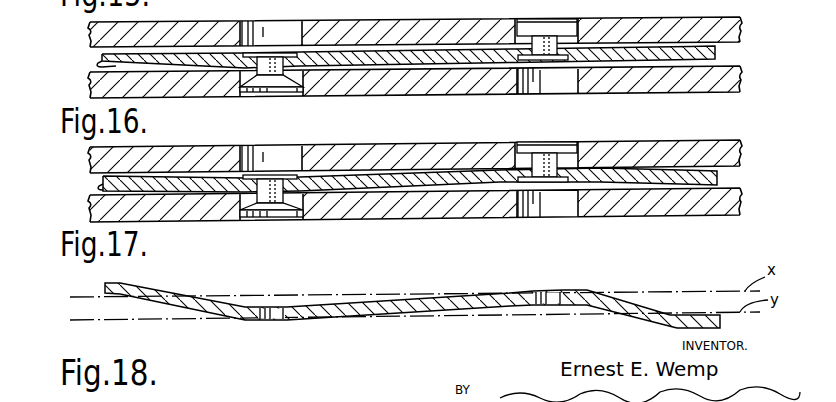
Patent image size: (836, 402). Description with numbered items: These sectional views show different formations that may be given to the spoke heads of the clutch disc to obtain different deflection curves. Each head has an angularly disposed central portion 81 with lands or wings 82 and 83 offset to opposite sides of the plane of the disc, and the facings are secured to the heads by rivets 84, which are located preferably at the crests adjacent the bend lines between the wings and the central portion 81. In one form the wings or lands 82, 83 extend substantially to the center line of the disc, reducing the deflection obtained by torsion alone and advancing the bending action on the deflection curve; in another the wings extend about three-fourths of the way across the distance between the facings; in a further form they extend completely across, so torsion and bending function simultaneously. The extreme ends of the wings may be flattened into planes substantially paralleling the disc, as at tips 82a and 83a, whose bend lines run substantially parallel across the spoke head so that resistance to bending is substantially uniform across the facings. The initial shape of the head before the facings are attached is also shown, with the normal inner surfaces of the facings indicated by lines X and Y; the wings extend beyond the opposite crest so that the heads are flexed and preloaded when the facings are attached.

In FIG. 15, the central portion 81 is at (425, 48).
In FIG. 16, the central portion 81 is at (418, 171).
In FIG. 17, the central portion 81 is at (432, 297).
In FIG. 15, the land or wing 82 is at (605, 46).
In FIG. 16, the land or wing 82 is at (610, 170).
In FIG. 17, the land or wing 82 is at (625, 298).
In FIG. 15, the tip of wing 82a is at (700, 47).
In FIG. 16, the tip of wing 82a is at (700, 171).
In FIG. 17, the tip of wing 82a is at (700, 314).
In FIG. 15, the land or wing 83 is at (197, 52).
In FIG. 16, the land or wing 83 is at (205, 176).
In FIG. 17, the land or wing 83 is at (187, 296).
In FIG. 15, the tip of wing 83a is at (102, 63).
In FIG. 16, the tip of wing 83a is at (103, 184).
In FIG. 17, the tip of wing 83a is at (118, 282).
In FIG. 15, the rivet 84 is at (277, 53).
In FIG. 16, the rivet 84 is at (280, 176).